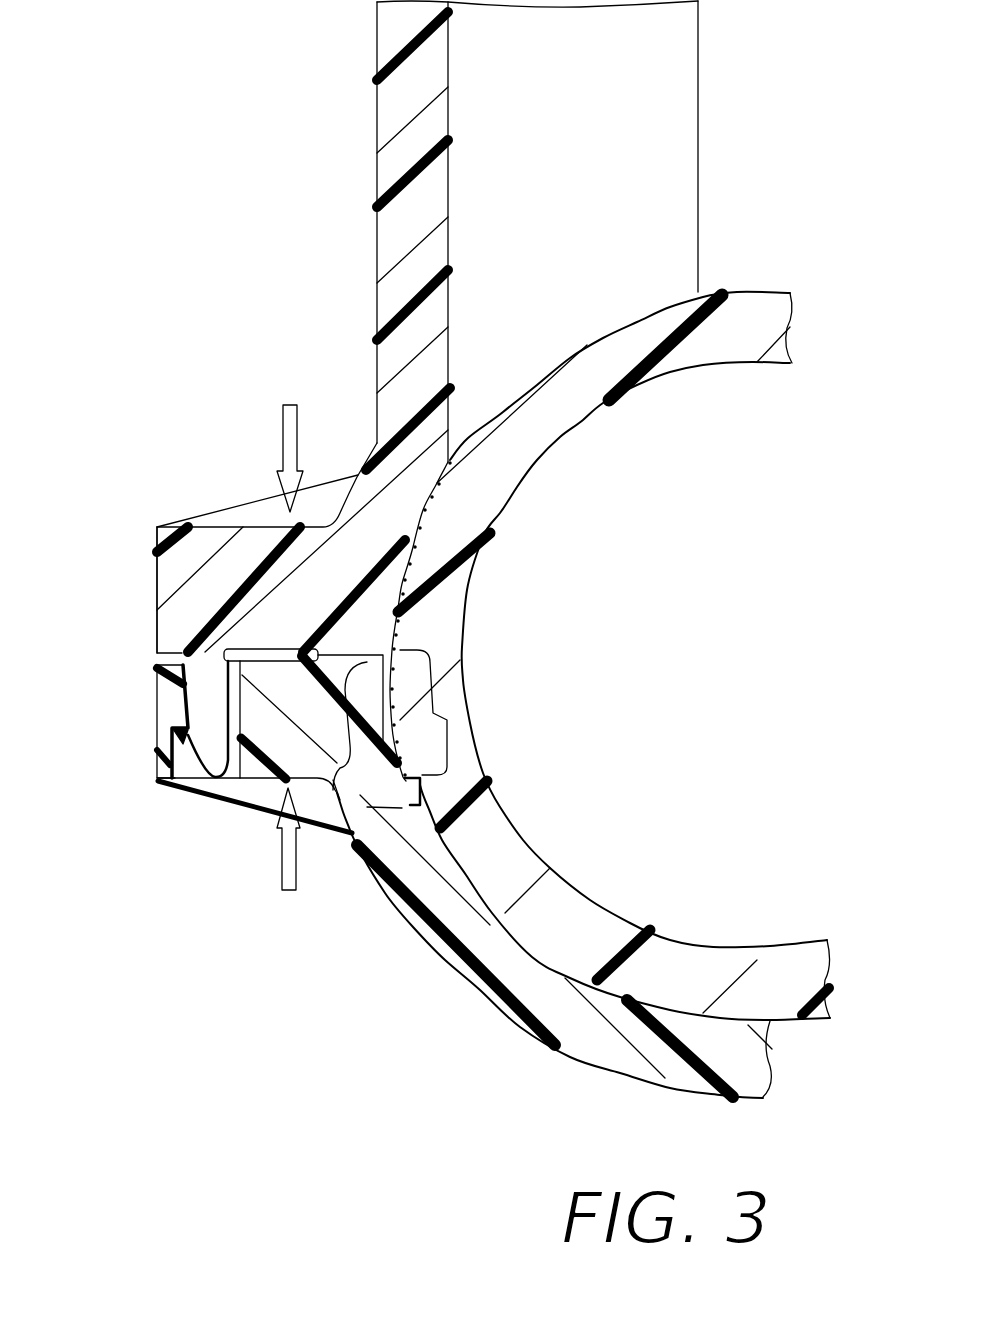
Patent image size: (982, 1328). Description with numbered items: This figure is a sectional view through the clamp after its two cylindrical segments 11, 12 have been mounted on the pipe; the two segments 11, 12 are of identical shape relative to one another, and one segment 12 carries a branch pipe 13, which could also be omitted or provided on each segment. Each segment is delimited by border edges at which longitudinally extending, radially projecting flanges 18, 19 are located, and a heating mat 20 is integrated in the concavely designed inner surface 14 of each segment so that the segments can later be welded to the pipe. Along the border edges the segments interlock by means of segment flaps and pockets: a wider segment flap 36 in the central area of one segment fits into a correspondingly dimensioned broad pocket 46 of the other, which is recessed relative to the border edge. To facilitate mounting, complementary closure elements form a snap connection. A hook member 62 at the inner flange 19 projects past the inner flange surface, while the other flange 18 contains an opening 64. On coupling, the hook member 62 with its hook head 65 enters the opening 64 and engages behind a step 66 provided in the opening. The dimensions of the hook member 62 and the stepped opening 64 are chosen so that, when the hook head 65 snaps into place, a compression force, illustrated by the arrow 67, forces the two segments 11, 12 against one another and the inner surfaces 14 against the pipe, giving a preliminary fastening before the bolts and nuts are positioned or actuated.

The cylindrical segment 11 is at (727, 1068).
The cylindrical segment 12 is at (517, 308).
The branch pipe 13 is at (408, 147).
The inner surface 14 is at (663, 996).
The flange 18 is at (167, 697).
The inner flange 19 is at (203, 600).
The heating mat 20 is at (427, 510).
The broad segment flap 36 is at (447, 720).
The broad pocket 46 is at (333, 780).
The hook member 62 is at (228, 661).
The opening 64 is at (233, 780).
The hook head 65 is at (157, 779).
The step 66 is at (178, 729).
The compression force arrow 67 is at (287, 437).